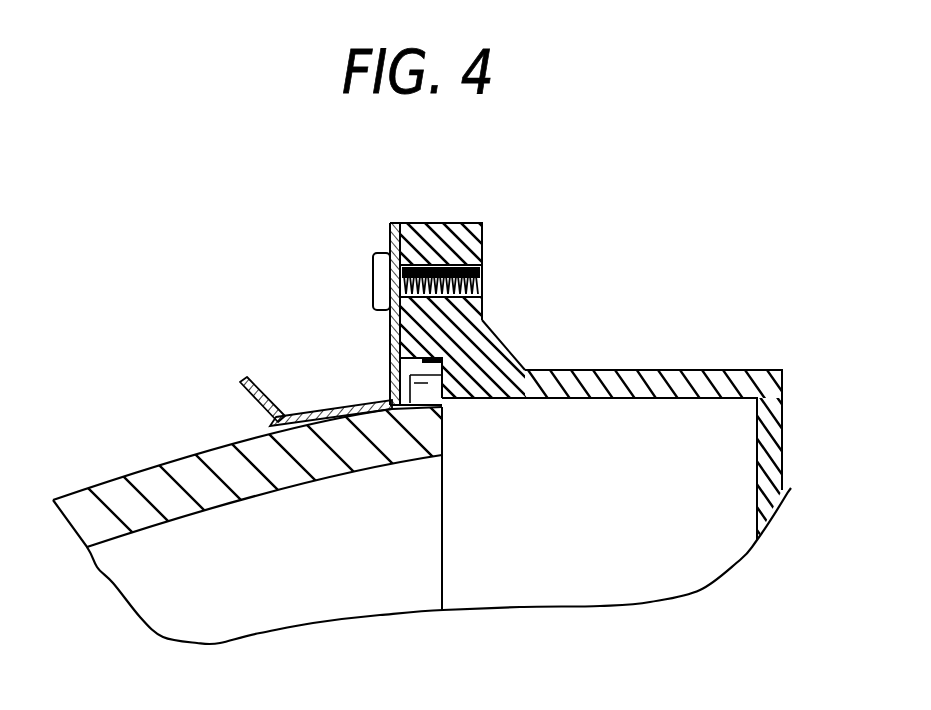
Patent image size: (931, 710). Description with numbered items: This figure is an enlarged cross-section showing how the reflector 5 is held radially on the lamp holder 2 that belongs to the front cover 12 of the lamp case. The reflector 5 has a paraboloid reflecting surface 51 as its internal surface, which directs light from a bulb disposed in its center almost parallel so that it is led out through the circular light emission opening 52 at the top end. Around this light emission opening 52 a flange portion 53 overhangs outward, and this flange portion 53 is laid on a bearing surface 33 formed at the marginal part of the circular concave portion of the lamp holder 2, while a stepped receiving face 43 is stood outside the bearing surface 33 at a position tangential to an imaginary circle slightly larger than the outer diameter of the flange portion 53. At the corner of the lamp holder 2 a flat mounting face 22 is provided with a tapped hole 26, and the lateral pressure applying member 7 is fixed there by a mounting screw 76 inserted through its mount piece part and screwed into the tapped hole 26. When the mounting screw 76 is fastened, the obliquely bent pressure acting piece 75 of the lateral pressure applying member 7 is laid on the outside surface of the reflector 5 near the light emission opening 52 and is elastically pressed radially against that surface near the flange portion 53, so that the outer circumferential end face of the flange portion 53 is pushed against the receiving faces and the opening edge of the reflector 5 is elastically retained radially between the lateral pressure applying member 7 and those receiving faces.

The lamp holder 2 is at (440, 222).
The mounting face 22 is at (391, 240).
The mounting screw 76 is at (373, 284).
The tapped hole 26 is at (483, 280).
The receiving face 43 is at (486, 333).
The front cover 12 is at (680, 370).
The flange portion 53 is at (399, 390).
The bearing surface 33 is at (420, 384).
The reflector 5 is at (133, 469).
The pressure acting piece 75 is at (343, 418).
The lateral pressure applying member 7 is at (234, 357).
The light emission opening 52 is at (445, 522).
The reflecting surface 51 is at (126, 538).